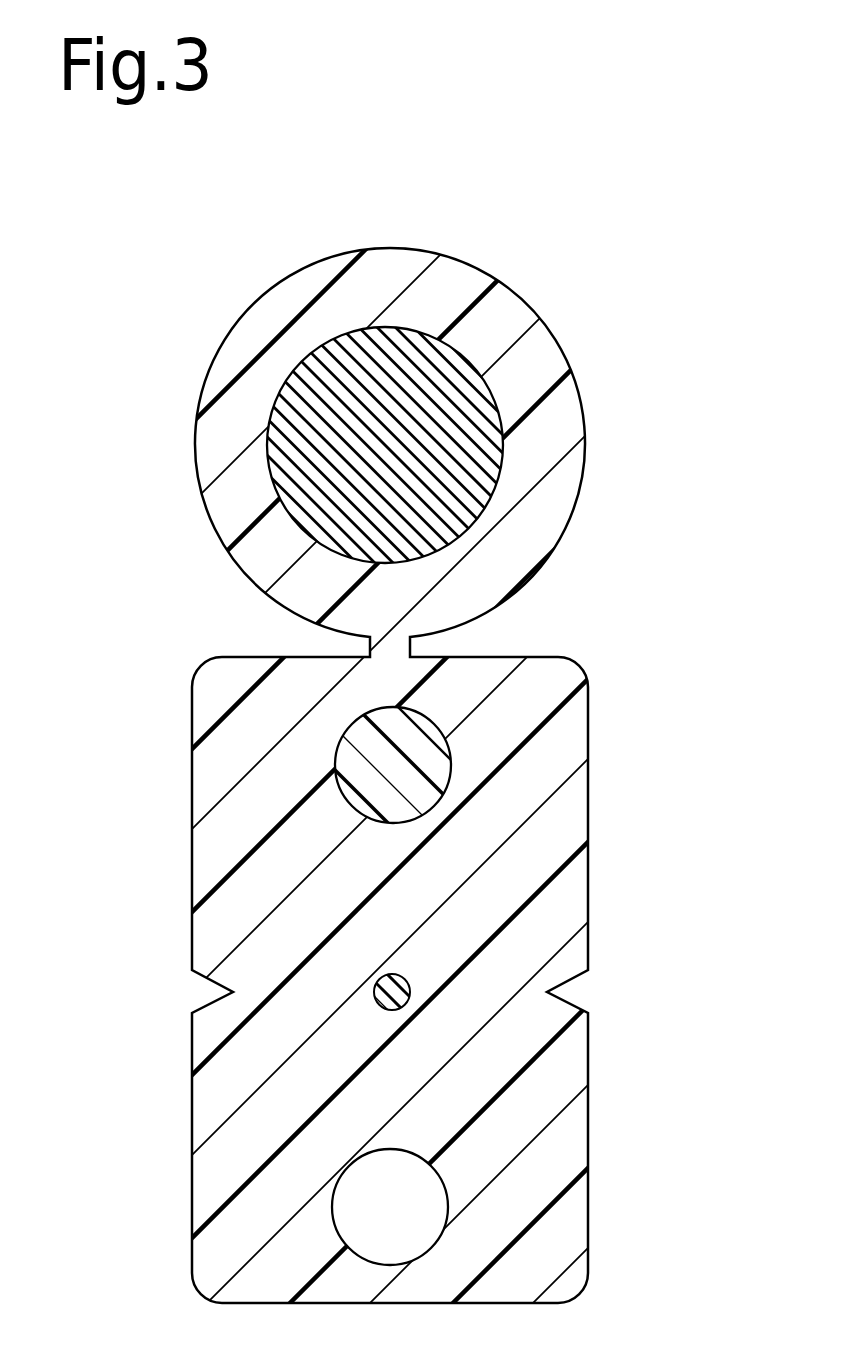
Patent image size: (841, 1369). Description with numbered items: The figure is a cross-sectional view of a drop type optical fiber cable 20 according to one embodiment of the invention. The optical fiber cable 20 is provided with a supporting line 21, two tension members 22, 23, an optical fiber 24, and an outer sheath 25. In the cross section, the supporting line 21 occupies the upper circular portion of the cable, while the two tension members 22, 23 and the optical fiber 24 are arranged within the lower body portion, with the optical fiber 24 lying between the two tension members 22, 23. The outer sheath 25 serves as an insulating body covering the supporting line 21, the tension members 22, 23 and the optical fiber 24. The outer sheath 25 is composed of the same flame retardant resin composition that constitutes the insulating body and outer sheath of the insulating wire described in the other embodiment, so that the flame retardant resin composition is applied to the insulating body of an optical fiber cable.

The optical fiber cable 20 is at (420, 687).
The supporting line 21 is at (392, 437).
The tension member 22 is at (422, 755).
The tension member 23 is at (427, 1200).
The optical fiber 24 is at (407, 983).
The outer sheath 25 is at (555, 843).